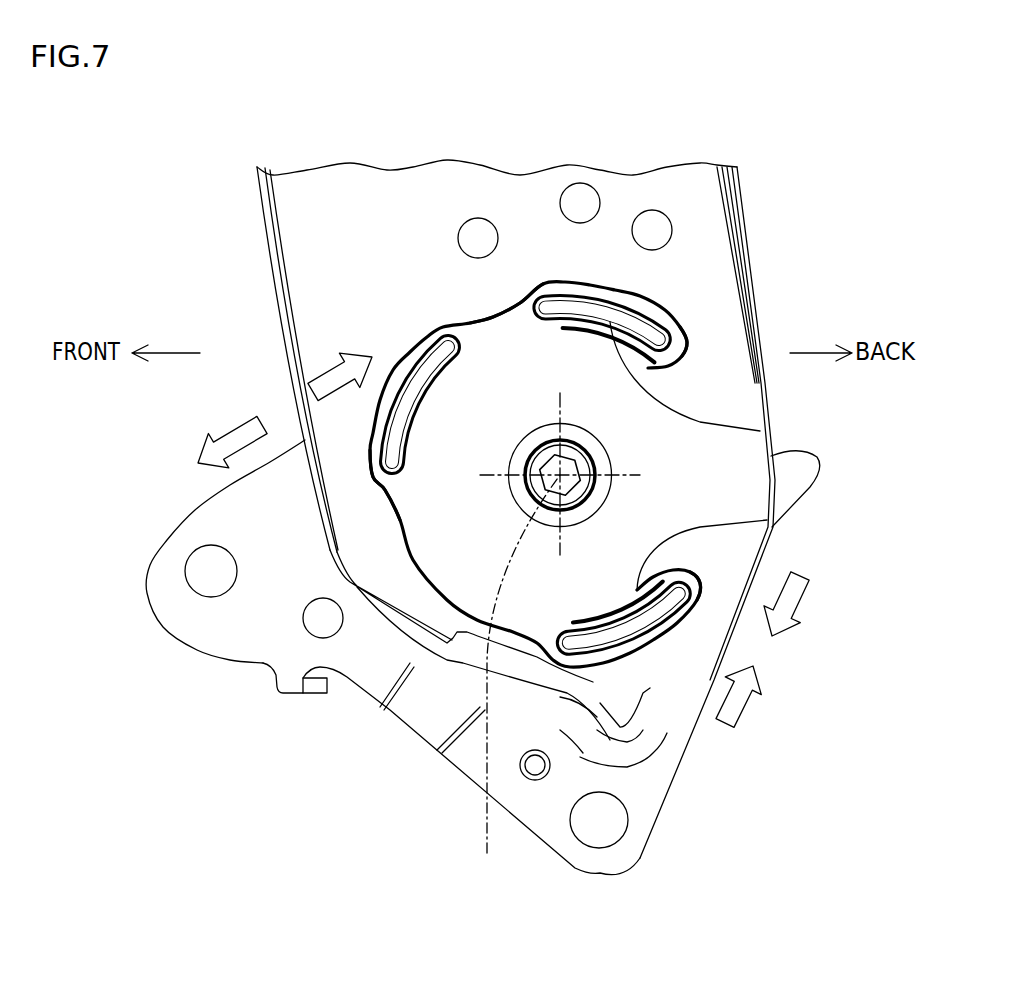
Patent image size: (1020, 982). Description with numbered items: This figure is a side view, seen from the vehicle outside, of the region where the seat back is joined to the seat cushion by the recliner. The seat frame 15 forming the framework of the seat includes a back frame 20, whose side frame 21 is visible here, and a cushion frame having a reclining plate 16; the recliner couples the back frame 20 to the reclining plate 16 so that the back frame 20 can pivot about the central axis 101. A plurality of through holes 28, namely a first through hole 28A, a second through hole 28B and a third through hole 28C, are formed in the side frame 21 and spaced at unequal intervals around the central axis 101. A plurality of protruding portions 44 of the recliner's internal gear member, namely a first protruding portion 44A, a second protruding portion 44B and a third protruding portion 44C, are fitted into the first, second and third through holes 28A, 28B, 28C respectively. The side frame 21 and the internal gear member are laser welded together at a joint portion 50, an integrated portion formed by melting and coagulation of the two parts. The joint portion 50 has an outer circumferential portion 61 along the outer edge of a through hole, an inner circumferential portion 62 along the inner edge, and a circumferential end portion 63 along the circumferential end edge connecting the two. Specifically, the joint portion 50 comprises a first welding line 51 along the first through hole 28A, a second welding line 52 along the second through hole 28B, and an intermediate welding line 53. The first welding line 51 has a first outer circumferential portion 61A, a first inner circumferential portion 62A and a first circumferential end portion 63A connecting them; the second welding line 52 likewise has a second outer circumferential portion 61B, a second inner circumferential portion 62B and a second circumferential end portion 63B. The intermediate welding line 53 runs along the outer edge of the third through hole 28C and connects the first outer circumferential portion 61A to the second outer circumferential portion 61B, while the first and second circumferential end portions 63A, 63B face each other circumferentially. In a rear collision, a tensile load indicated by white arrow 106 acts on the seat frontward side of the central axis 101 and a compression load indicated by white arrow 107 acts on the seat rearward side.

The seat frame 15 is at (289, 140).
The reclining plate 16 is at (168, 578).
The back frame 20 is at (245, 216).
The side frame 21 is at (700, 193).
The through holes 28 is at (394, 542).
The first through hole 28A is at (620, 323).
The second through hole 28B is at (627, 640).
The third through hole 28C is at (367, 440).
The protruding portions 44 is at (413, 512).
The first protruding portion 44A is at (567, 307).
The second protruding portion 44B is at (590, 645).
The third protruding portion 44C is at (407, 363).
The joint portion 50 is at (698, 371).
The first welding line 51 is at (674, 309).
The second welding line 52 is at (580, 660).
The intermediate welding line 53 is at (363, 485).
The outer circumferential portion 61 is at (716, 448).
The first outer circumferential portion 61A is at (668, 298).
The second outer circumferential portion 61B is at (667, 633).
The inner circumferential portion 62 is at (755, 456).
The first inner circumferential portion 62A is at (760, 431).
The second inner circumferential portion 62B is at (767, 520).
The circumferential end portion 63 is at (785, 455).
The first circumferential end portion 63A is at (690, 347).
The second circumferential end portion 63B is at (690, 577).
The central axis 101 is at (515, 673).
The white arrow 106 is at (235, 420).
The white arrow 107 is at (745, 715).